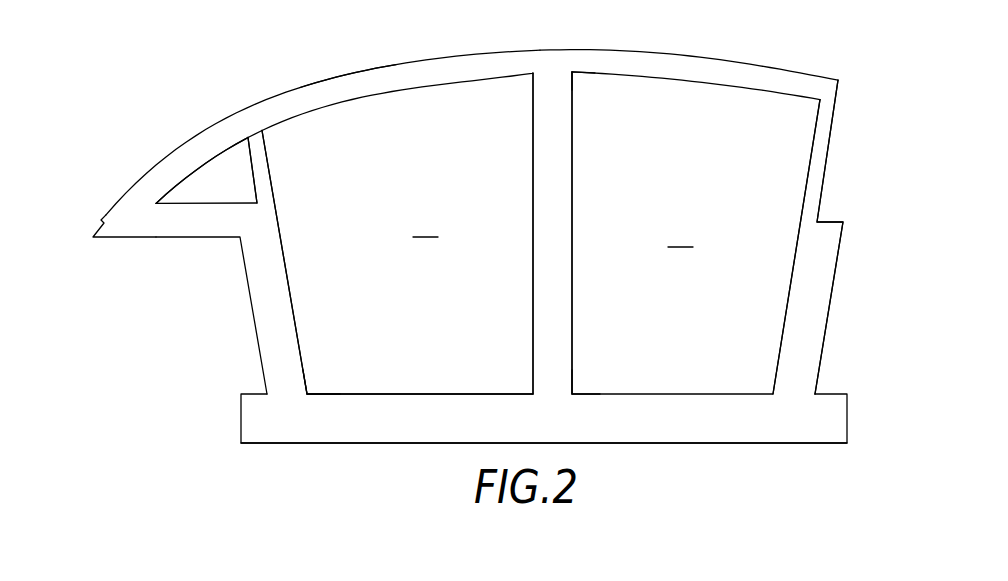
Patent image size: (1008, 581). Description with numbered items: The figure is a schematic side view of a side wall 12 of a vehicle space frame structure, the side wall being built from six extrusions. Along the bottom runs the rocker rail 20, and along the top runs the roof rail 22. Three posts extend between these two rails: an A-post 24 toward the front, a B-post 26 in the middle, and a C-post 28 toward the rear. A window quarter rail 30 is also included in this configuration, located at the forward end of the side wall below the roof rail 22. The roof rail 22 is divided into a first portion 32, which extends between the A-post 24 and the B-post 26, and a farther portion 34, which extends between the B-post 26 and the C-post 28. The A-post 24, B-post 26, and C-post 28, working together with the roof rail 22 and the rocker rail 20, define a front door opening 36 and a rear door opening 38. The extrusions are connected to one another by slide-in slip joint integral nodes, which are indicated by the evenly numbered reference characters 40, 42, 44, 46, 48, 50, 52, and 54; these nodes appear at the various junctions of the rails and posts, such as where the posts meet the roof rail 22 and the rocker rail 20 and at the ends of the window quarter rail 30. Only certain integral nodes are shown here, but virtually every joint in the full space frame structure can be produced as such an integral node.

The side wall 12 is at (240, 417).
The rocker rail 20 is at (472, 393).
The roof rail 22 is at (238, 118).
The A-post 24 is at (283, 243).
The B-post 26 is at (532, 178).
The C-post 28 is at (805, 177).
The window quarter rail 30 is at (223, 238).
The first portion of roof rail 32 is at (344, 72).
The farther portion of roof rail 34 is at (738, 63).
The front door opening 36 is at (397, 233).
The rear door opening 38 is at (696, 233).
The integral node 40 is at (262, 128).
The integral node 42 is at (573, 75).
The integral node 44 is at (833, 138).
The integral node 46 is at (772, 443).
The integral node 48 is at (573, 394).
The integral node 50 is at (308, 393).
The integral node 52 is at (98, 223).
The integral node 54 is at (253, 198).